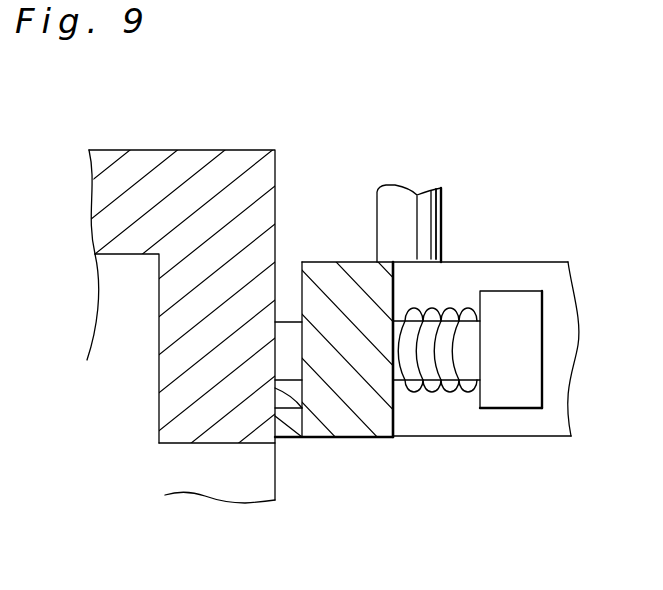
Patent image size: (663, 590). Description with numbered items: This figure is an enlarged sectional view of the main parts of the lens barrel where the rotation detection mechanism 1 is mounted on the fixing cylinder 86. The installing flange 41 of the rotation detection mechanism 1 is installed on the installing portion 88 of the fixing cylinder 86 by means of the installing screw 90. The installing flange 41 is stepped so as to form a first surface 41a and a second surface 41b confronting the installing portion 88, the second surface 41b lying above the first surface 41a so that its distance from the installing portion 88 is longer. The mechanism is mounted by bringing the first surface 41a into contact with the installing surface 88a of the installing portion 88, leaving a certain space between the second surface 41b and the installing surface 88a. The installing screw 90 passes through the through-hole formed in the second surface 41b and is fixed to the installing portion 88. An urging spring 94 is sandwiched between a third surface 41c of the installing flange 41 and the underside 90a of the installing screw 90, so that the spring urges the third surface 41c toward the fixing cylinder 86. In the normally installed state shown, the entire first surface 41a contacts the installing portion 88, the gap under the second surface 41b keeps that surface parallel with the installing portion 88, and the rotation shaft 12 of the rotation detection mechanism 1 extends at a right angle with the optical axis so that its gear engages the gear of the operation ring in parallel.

The rotation detection mechanism 1 is at (539, 259).
The rotation shaft 12 is at (442, 233).
The installing flange 41 is at (356, 427).
The first surface 41a is at (275, 416).
The second surface 41b is at (303, 283).
The third surface 41c is at (395, 421).
The fixing cylinder 86 is at (187, 150).
The installing portion 88 is at (172, 378).
The installing surface 88a is at (296, 406).
The installing screw 90 is at (518, 409).
The underside 90a is at (478, 402).
The urging spring 94 is at (455, 393).